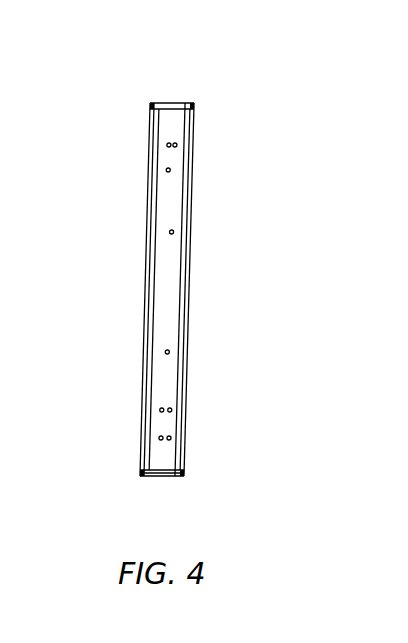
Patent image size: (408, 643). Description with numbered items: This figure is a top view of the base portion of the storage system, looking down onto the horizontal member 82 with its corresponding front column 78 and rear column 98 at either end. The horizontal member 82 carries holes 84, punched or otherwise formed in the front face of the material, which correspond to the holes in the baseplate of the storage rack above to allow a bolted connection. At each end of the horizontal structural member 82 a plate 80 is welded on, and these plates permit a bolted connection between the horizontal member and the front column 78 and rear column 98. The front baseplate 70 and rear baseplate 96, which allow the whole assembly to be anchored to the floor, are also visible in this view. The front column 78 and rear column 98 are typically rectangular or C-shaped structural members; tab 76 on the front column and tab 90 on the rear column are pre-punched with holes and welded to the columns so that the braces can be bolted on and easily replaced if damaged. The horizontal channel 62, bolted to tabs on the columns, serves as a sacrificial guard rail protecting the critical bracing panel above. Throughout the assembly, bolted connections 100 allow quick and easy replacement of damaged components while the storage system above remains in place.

The horizontal channel 62 is at (213, 289).
The front baseplate 70 is at (233, 425).
The tab 76 is at (111, 419).
The front column 78 is at (213, 457).
The plate 80 is at (159, 289).
The horizontal member 82 is at (150, 268).
The holes 84 is at (174, 172).
The tab 90 is at (103, 244).
The rear baseplate 96 is at (230, 289).
The rear column 98 is at (120, 131).
The bolted connections 100 is at (159, 289).